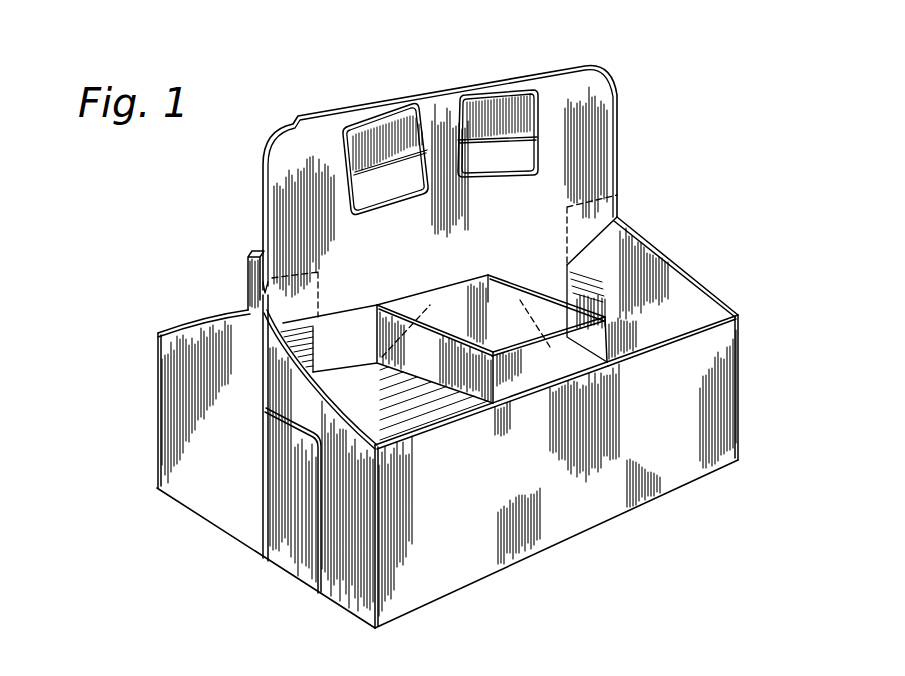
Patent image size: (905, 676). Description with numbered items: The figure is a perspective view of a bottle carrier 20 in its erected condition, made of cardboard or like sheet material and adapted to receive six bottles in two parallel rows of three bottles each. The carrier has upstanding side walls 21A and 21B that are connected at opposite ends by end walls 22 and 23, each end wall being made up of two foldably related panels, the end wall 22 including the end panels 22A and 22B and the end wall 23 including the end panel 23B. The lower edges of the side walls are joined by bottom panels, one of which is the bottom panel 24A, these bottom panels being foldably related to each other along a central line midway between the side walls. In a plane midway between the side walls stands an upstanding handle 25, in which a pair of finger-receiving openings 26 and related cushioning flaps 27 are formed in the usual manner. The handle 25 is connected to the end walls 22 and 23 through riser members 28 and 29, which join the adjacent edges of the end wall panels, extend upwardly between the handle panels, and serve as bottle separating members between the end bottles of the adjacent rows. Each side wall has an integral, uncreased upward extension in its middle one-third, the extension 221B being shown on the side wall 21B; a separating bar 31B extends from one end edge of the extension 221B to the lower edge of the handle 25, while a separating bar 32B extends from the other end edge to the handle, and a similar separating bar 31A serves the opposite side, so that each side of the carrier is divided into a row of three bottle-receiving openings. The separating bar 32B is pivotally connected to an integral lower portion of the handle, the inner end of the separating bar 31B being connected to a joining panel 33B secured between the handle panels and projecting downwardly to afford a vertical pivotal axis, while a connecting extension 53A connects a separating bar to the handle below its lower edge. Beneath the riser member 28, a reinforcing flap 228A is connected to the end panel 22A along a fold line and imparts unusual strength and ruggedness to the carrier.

The bottle carrier 20 is at (648, 198).
The side wall 21A is at (224, 317).
The side wall 21B is at (702, 360).
The end wall 22 is at (218, 513).
The end panel 22A is at (170, 417).
The end panel 22B is at (353, 578).
The reinforcing flap 228A is at (303, 553).
The end wall 23 is at (712, 290).
The end panel 23B is at (667, 287).
The bottom panel 24A is at (442, 418).
The handle 25 is at (604, 150).
The finger-receiving opening 26 is at (389, 206).
The cushioning flap 27 is at (376, 122).
The riser member 28 is at (303, 347).
The riser member 29 is at (600, 258).
The separating bar 31A is at (250, 270).
The separating bar 31B is at (425, 360).
The separating bar 32B is at (505, 298).
The joining panel 33B is at (427, 300).
The connecting extension 53A is at (546, 272).
The upward extension 221B is at (513, 380).